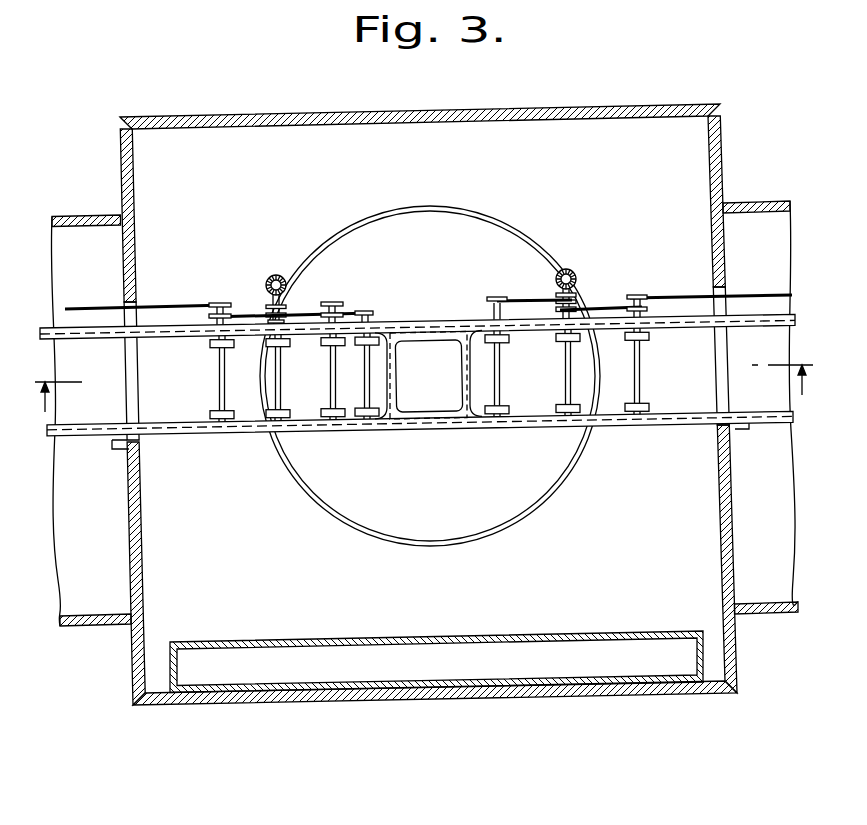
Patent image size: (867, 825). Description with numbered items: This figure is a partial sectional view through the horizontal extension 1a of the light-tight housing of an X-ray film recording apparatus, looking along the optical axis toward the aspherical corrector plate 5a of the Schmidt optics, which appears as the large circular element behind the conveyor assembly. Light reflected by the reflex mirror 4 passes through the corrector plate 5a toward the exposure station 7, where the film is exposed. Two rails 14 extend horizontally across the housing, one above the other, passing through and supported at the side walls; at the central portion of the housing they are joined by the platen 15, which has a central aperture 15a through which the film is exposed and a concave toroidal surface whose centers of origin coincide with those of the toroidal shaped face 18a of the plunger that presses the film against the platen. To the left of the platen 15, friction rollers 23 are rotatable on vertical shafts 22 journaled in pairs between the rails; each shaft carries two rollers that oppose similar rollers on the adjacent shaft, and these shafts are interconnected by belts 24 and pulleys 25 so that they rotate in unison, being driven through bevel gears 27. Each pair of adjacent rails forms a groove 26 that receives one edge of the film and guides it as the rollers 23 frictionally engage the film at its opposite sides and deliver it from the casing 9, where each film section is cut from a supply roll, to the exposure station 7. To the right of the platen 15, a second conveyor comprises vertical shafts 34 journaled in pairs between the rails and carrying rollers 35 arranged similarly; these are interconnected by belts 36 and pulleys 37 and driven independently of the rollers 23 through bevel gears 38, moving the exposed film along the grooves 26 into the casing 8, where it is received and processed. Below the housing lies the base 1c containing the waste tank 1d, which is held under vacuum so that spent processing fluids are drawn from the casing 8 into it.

The horizontal extension of the housing 1a is at (120, 160).
The base 1c is at (132, 672).
The waste tank 1d is at (172, 694).
The reflex mirror 4 is at (428, 391).
The aspherical corrector plate 5a is at (369, 522).
The exposure station 7 is at (367, 440).
The casing 8 is at (762, 611).
The casing 9 is at (78, 626).
The rails 14 is at (182, 338).
The platen 15 is at (462, 418).
The central aperture 15a is at (428, 409).
The toroidal shaped face 18a is at (410, 352).
The vertical shafts 22 is at (283, 378).
The friction rollers 23 is at (230, 348).
The belts 24 is at (165, 306).
The pulleys 25 is at (225, 302).
The groove 26 is at (194, 416).
The bevel gears 27 is at (282, 275).
The vertical shafts 34 is at (568, 378).
The rollers 35 is at (560, 341).
The belts 36 is at (530, 300).
The pulleys 37 is at (497, 296).
The bevel gears 38 is at (572, 272).